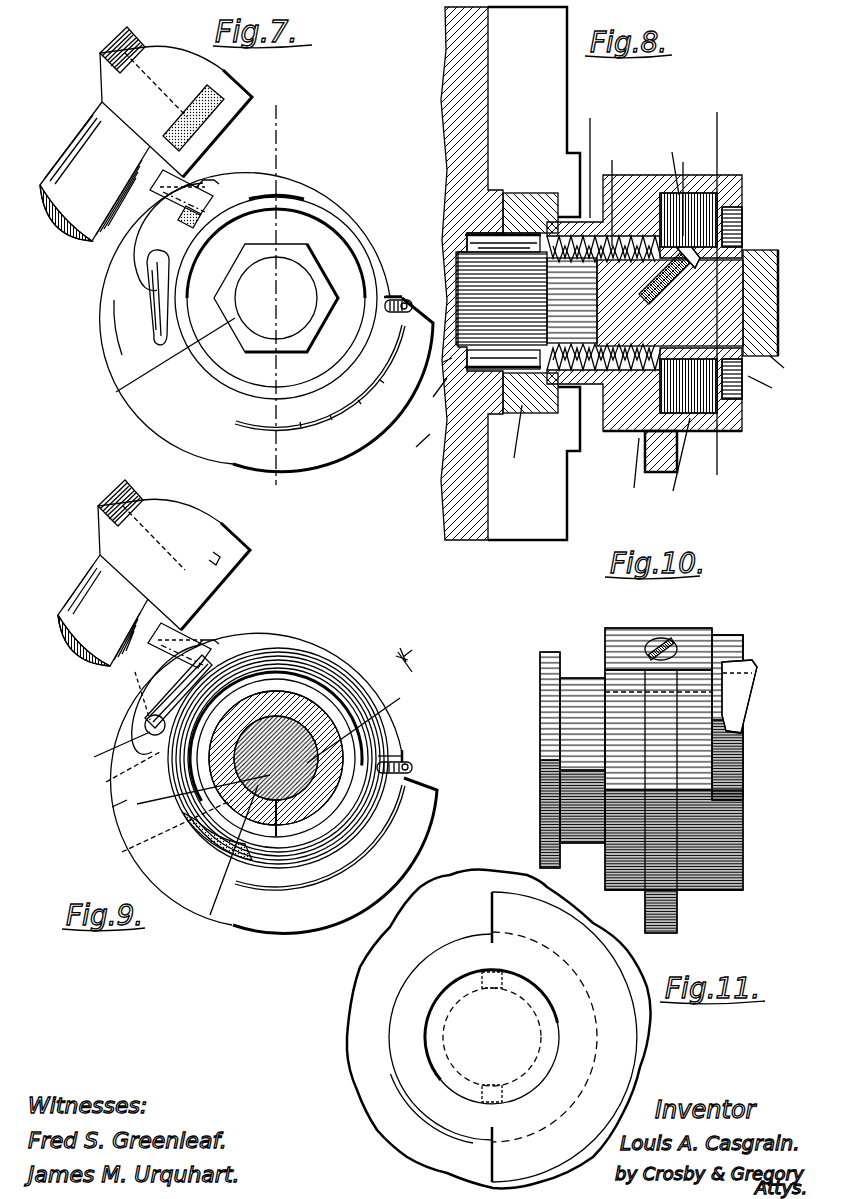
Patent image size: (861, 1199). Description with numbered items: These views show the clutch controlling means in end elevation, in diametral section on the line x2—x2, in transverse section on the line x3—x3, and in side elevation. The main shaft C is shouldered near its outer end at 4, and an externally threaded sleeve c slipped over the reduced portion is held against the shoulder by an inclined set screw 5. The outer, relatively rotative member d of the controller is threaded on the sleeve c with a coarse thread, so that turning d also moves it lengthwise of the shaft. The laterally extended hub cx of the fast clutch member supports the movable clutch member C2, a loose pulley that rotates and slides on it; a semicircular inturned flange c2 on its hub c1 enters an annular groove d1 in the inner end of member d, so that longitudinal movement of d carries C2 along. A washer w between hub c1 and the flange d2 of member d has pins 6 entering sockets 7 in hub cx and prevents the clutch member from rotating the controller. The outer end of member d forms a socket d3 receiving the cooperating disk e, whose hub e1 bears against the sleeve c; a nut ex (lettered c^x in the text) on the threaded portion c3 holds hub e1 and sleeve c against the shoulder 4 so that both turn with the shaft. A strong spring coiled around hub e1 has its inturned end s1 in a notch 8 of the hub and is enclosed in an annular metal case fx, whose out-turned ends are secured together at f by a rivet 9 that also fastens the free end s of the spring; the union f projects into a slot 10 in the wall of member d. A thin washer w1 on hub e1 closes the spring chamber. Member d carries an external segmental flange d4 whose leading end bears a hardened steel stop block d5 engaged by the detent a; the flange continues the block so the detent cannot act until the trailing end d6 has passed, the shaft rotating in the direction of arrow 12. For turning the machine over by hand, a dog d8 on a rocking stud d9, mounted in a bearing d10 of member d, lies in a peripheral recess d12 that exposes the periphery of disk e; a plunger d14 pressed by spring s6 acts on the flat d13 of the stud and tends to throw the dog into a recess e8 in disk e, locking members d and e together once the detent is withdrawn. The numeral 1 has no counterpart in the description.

In FIG. 7, the detent a is at (225, 112).
In FIG. 9, the detent a is at (222, 573).
In FIG. 7, the main shaft C is at (276, 298).
In FIG. 8, the main shaft C is at (452, 262).
In FIG. 9, the main shaft C is at (253, 782).
In FIG. 11, the main shaft C is at (492, 1037).
In FIG. 8, the movable clutch member C2 is at (453, 32).
In FIG. 11, the movable clutch member C2 is at (463, 888).
In FIG. 8, the externally threaded sleeve c is at (610, 191).
In FIG. 11, the hub of clutch member c1 is at (442, 953).
In FIG. 8, the inturned flange c2 is at (568, 403).
In FIG. 11, the inturned flange c2 is at (605, 983).
In FIG. 8, the threaded portion of shaft c3 is at (777, 322).
In FIG. 8, the hub of fast clutch member cx is at (432, 397).
In FIG. 7, the controlling member d is at (318, 189).
In FIG. 8, the controlling member d is at (622, 404).
In FIG. 9, the controlling member d is at (356, 668).
In FIG. 10, the controlling member d is at (604, 879).
In FIG. 8, the annular groove d1 is at (600, 152).
In FIG. 10, the annular groove d1 is at (577, 672).
In FIG. 8, the flange d2 is at (548, 200).
In FIG. 10, the flange d2 is at (543, 655).
In FIG. 8, the socket d3 is at (664, 159).
In FIG. 7, the segmental flange d4 is at (123, 342).
In FIG. 9, the segmental flange d4 is at (105, 809).
In FIG. 10, the segmental flange d4 is at (680, 922).
In FIG. 7, the stop block d5 is at (170, 196).
In FIG. 9, the stop block d5 is at (170, 658).
In FIG. 10, the stop block d5 is at (625, 640).
In FIG. 7, the trailing end of segmental stop d6 is at (411, 322).
In FIG. 9, the trailing end of segmental stop d6 is at (438, 790).
In FIG. 7, the dog d8 is at (245, 250).
In FIG. 10, the dog d8 is at (756, 666).
In FIG. 9, the rocking stud d9 is at (147, 720).
In FIG. 10, the rocking stud d9 is at (745, 737).
In FIG. 10, the bearing d10 is at (686, 728).
In FIG. 7, the peripheral recess d12 is at (162, 362).
In FIG. 9, the peripheral recess d12 is at (199, 801).
In FIG. 10, the peripheral recess d12 is at (745, 790).
In FIG. 9, the flattened side of stud d13 is at (106, 755).
In FIG. 9, the plunger d14 is at (120, 774).
In FIG. 7, the disk e is at (238, 397).
In FIG. 8, the disk e is at (743, 224).
In FIG. 10, the disk e is at (740, 767).
In FIG. 8, the hub of disk e1 is at (686, 183).
In FIG. 9, the hub of disk e1 is at (294, 800).
In FIG. 7, the recess e8 is at (293, 196).
In FIG. 7, the nut ex is at (233, 323).
In FIG. 7, the union of case ends f is at (415, 308).
In FIG. 9, the union of case ends f is at (413, 768).
In FIG. 9, the annular metal case fx is at (280, 648).
In FIG. 7, the free end of spring s is at (386, 322).
In FIG. 9, the free end of spring s is at (320, 683).
In FIG. 8, the inturned spring end s1 is at (680, 436).
In FIG. 9, the inturned spring end s1 is at (223, 867).
In FIG. 9, the plunger spring s6 is at (167, 832).
In FIG. 8, the washer w is at (511, 445).
In FIG. 8, the thin washer w1 is at (640, 476).
In FIG. 7, the section line x2 is at (280, 292).
In FIG. 8, the section line x3 is at (719, 289).
In FIG. 8, the wall opening 1 is at (443, 363).
In FIG. 8, the shoulder 4 is at (557, 300).
In FIG. 8, the set screw 5 is at (685, 278).
In FIG. 8, the pins 6 is at (488, 232).
In FIG. 8, the sockets 7 is at (452, 235).
In FIG. 11, the sockets 7 is at (500, 977).
In FIG. 8, the notch 8 is at (765, 386).
In FIG. 9, the notch 8 is at (357, 725).
In FIG. 7, the rivet 9 is at (406, 305).
In FIG. 9, the rivet 9 is at (405, 762).
In FIG. 7, the slot 10 is at (400, 298).
In FIG. 9, the slot 10 is at (388, 750).
In FIG. 9, the arrow 12 is at (409, 652).